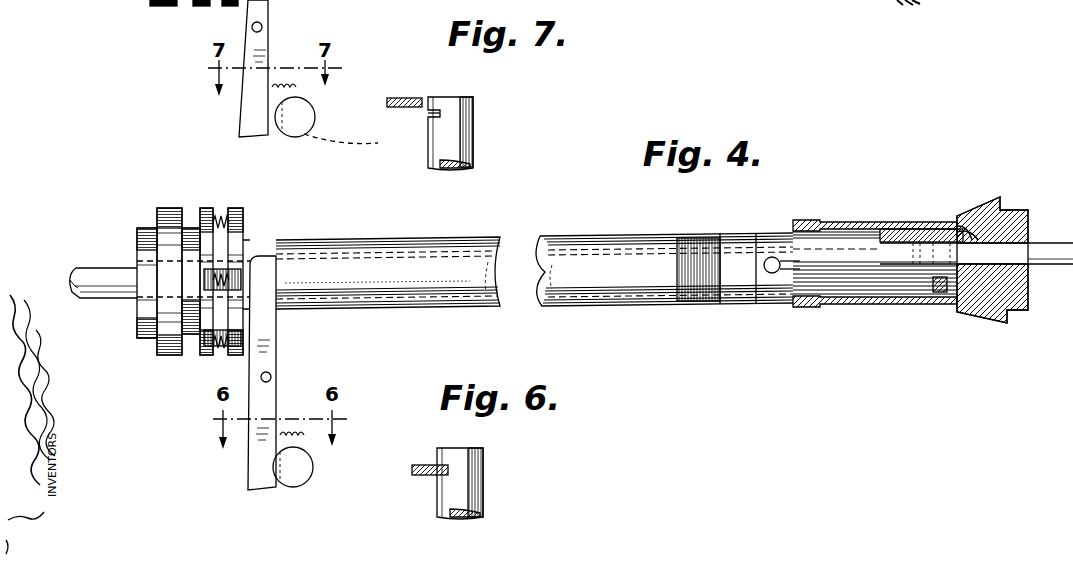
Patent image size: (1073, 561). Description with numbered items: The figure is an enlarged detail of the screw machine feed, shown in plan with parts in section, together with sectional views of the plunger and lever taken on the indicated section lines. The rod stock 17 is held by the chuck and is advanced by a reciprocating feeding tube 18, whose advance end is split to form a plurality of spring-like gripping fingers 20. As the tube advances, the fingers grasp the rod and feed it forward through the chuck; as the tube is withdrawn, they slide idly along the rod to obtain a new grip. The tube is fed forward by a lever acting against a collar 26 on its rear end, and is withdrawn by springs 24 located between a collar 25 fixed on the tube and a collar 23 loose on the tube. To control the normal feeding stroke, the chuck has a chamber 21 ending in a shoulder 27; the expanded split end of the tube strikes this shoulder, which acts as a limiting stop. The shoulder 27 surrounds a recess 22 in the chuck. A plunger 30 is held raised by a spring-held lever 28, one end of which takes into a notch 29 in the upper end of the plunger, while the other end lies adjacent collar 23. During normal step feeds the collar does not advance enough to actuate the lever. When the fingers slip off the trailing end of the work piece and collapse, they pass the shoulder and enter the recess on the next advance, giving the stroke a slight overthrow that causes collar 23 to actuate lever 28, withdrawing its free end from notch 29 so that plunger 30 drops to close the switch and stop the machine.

In FIG. 4, the rod stock 17 is at (88, 274).
In FIG. 4, the feeding tube 18 is at (500, 239).
In FIG. 4, the gripping fingers 20 is at (899, 231).
In FIG. 4, the chamber 21 is at (945, 254).
In FIG. 4, the recess 22 is at (1030, 222).
In FIG. 4, the collar 23 is at (243, 212).
In FIG. 4, the springs 24 is at (221, 222).
In FIG. 4, the collar 25 is at (203, 208).
In FIG. 4, the collar 26 is at (137, 232).
In FIG. 4, the shoulder 27 is at (965, 214).
In FIG. 4, the lever 28 is at (290, 117).
In FIG. 7, the lever 28 is at (401, 98).
In FIG. 6, the lever 28 is at (422, 465).
In FIG. 7, the notch 29 is at (428, 115).
In FIG. 4, the plunger 30 is at (314, 118).
In FIG. 7, the plunger 30 is at (473, 124).
In FIG. 6, the plunger 30 is at (481, 458).